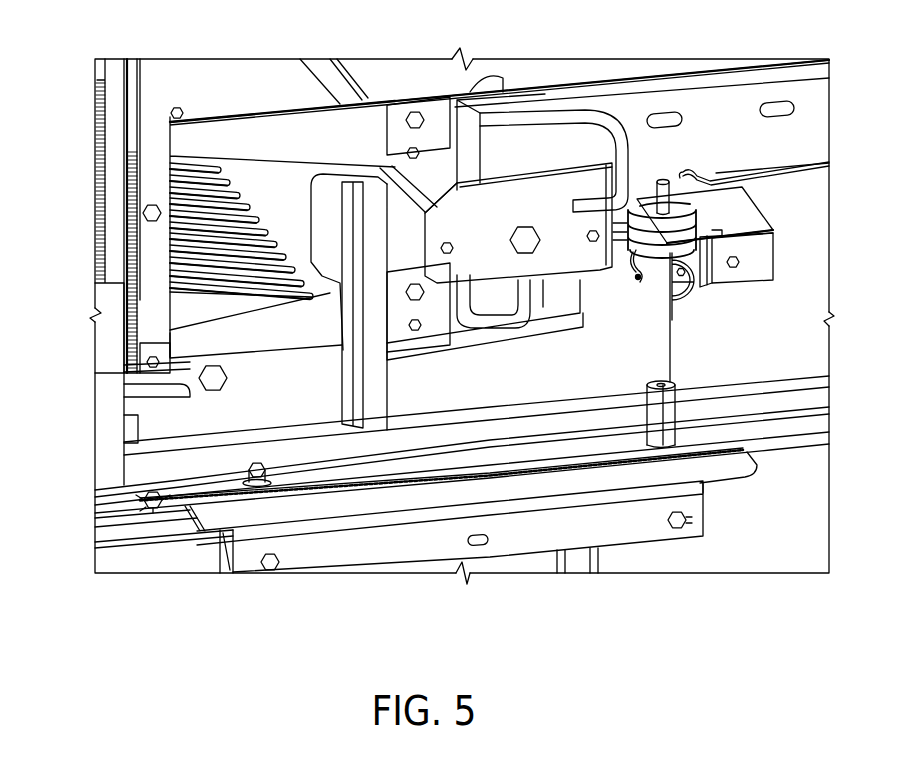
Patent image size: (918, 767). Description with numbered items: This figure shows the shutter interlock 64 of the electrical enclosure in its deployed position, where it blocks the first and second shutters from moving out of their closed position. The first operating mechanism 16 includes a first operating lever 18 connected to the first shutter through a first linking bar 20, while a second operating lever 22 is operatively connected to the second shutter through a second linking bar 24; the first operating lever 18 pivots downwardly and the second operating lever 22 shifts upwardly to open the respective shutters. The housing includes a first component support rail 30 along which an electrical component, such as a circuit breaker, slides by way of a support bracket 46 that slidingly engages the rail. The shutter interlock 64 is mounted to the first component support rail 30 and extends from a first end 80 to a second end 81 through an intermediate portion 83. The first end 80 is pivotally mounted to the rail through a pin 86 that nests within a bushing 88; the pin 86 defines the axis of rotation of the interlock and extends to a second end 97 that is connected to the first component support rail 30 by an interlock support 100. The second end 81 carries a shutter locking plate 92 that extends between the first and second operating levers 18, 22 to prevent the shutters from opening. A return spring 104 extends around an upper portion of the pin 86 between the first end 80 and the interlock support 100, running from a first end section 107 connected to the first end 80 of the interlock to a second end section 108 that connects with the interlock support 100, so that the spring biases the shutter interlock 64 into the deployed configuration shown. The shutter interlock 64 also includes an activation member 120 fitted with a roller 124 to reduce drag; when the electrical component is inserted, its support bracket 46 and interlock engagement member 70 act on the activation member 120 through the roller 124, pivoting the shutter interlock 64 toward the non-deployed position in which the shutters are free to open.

The first operating mechanism 16 is at (396, 178).
The first operating lever 18 is at (303, 143).
The first linking bar 20 is at (130, 84).
The second operating lever 22 is at (253, 338).
The second linking bar 24 is at (150, 288).
The first component support rail 30 is at (797, 438).
The support bracket 46 is at (748, 136).
The first shutter interlock 64 is at (520, 440).
The interlock engagement member 70 is at (557, 90).
The first end 80 is at (660, 348).
The second end 81 is at (392, 406).
The intermediate portion 83 is at (458, 380).
The pin 86 is at (680, 204).
The bushing 88 is at (752, 478).
The shutter locking plate 92 is at (340, 213).
The second end 97 is at (660, 178).
The interlock support 100 is at (768, 276).
The return spring 104 is at (684, 282).
The first end section 107 is at (652, 268).
The second end section 108 is at (700, 170).
The activation member 120 is at (571, 294).
The roller 124 is at (550, 270).